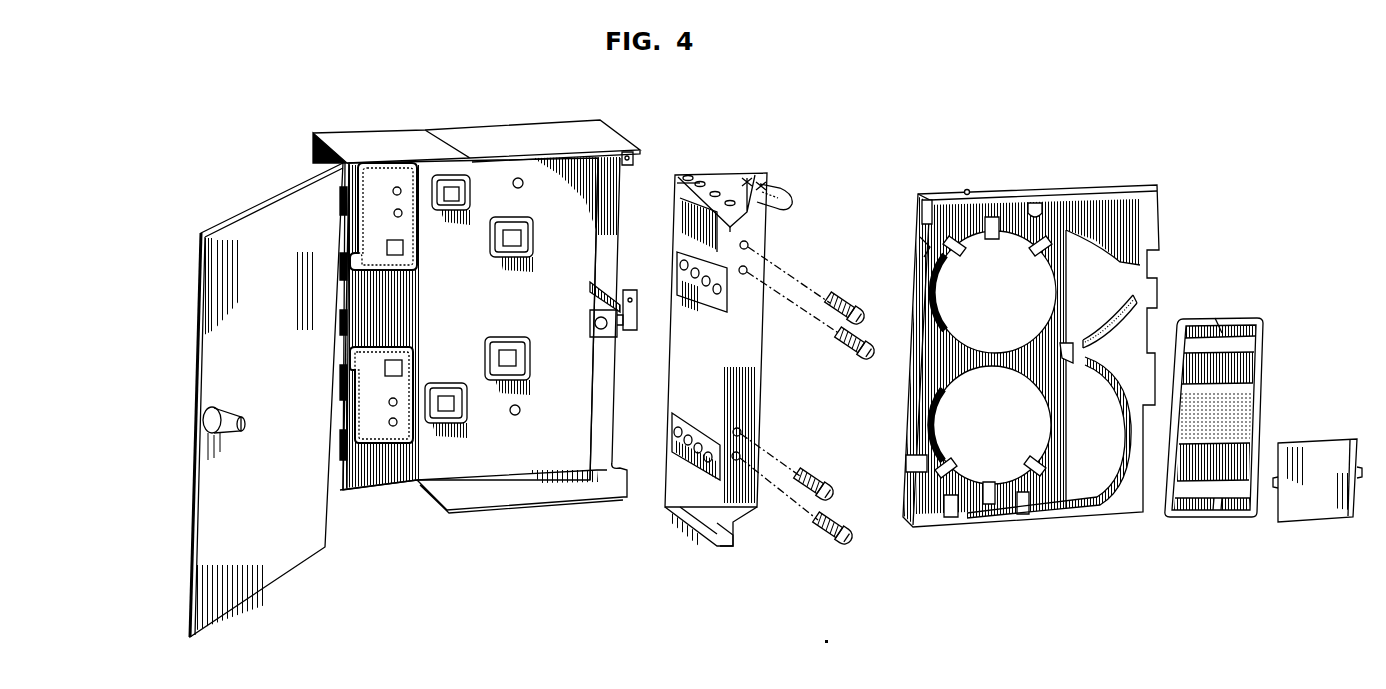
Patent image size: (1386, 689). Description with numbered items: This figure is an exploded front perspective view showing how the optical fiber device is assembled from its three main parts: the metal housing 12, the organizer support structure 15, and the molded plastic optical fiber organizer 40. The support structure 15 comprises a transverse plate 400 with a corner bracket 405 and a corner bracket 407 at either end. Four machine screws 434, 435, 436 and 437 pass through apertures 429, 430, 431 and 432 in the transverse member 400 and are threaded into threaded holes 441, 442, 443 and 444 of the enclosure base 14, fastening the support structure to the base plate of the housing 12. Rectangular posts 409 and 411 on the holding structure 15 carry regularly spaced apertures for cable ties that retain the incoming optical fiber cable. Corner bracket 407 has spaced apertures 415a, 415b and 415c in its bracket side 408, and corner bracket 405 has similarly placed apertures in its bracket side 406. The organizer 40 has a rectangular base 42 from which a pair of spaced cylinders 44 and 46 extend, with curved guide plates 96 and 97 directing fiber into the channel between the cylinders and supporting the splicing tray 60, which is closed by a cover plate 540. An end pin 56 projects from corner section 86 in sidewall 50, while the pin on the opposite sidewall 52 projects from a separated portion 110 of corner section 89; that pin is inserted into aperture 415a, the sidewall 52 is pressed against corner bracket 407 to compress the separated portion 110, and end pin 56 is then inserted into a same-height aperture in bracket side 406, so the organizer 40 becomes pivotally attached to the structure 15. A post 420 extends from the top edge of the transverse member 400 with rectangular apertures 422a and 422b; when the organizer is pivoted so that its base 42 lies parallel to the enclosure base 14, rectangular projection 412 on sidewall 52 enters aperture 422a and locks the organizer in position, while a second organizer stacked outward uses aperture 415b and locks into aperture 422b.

The housing 12 is at (471, 564).
The enclosure base 14 is at (507, 453).
The organizer support structure 15 is at (740, 597).
The optical fiber organizer 40 is at (1033, 586).
The base 42 is at (1065, 356).
The cylinder 44 is at (1023, 440).
The cylinder 46 is at (1030, 283).
The sidewall 50 is at (1100, 518).
The sidewall 52 is at (1100, 188).
The end pin 56 is at (918, 530).
The splicing tray 60 is at (1220, 554).
The corner section 86 is at (946, 520).
The corner section 89 is at (928, 223).
The curved guide plate 96 is at (1107, 377).
The curved guide plate 97 is at (1110, 333).
The separated portion 110 is at (930, 190).
The transverse plate 400 is at (698, 381).
The corner bracket 405 is at (705, 532).
The bracket side 406 is at (730, 533).
The corner bracket 407 is at (710, 208).
The bracket side 408 is at (685, 179).
The rectangular post 409 is at (682, 441).
The rectangular post 411 is at (718, 303).
The rectangular projection 412 is at (967, 189).
The aperture 415a is at (696, 182).
The aperture 415b is at (713, 192).
The aperture 415c is at (728, 201).
The post 420 is at (792, 204).
The rectangular aperture 422a is at (748, 180).
The rectangular aperture 422b is at (766, 186).
The aperture 429 is at (738, 461).
The aperture 430 is at (740, 431).
The aperture 431 is at (744, 275).
The aperture 432 is at (747, 244).
The machine screw 434 is at (832, 538).
The machine screw 435 is at (814, 481).
The machine screw 436 is at (848, 348).
The machine screw 437 is at (846, 298).
The threaded hole 441 is at (397, 424).
The threaded hole 442 is at (397, 399).
The threaded hole 443 is at (400, 216).
The threaded hole 444 is at (400, 188).
The cover plate 540 is at (1315, 505).